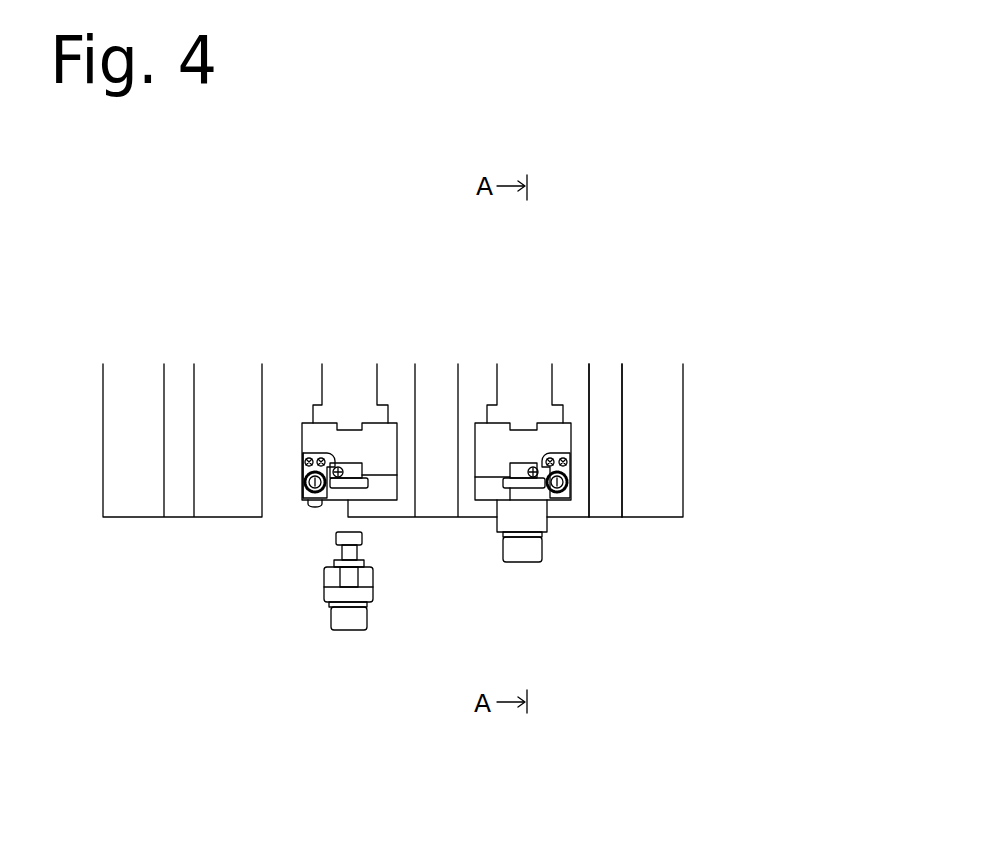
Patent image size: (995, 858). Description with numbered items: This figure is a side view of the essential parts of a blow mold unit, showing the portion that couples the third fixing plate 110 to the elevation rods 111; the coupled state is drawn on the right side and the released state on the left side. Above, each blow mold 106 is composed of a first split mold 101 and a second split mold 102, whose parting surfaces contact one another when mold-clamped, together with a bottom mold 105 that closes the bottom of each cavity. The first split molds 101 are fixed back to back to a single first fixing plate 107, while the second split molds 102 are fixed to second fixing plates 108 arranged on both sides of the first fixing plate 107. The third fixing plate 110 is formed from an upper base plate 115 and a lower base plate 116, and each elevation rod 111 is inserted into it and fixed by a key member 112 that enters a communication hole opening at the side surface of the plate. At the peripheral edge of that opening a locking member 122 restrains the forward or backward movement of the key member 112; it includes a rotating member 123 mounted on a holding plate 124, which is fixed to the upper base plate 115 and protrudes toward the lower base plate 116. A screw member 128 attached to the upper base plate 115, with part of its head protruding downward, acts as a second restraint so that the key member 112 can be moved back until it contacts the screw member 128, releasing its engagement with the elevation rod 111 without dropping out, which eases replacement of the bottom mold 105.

The first split mold 101 is at (397, 378).
The second split mold 102 is at (213, 380).
The bottom mold 105 is at (342, 393).
The blow mold 106 is at (718, 287).
The first fixing plate 107 is at (437, 383).
The second fixing plate 108 is at (602, 378).
The third fixing plate 110 is at (505, 624).
The elevation rod 111 is at (357, 623).
The key member 112 is at (288, 593).
The upper base plate 115 is at (490, 457).
The lower base plate 116 is at (488, 487).
The locking member 122 is at (582, 480).
The rotating member 123 is at (543, 496).
The holding plate 124 is at (301, 457).
The screw member 128 is at (340, 466).